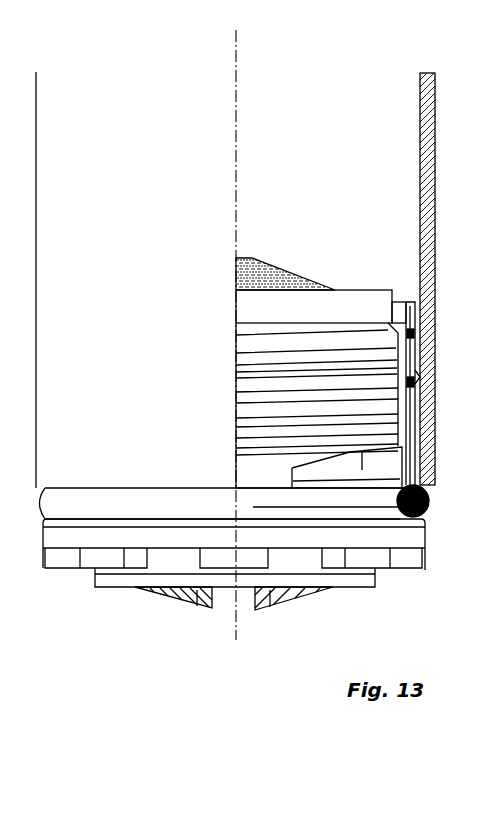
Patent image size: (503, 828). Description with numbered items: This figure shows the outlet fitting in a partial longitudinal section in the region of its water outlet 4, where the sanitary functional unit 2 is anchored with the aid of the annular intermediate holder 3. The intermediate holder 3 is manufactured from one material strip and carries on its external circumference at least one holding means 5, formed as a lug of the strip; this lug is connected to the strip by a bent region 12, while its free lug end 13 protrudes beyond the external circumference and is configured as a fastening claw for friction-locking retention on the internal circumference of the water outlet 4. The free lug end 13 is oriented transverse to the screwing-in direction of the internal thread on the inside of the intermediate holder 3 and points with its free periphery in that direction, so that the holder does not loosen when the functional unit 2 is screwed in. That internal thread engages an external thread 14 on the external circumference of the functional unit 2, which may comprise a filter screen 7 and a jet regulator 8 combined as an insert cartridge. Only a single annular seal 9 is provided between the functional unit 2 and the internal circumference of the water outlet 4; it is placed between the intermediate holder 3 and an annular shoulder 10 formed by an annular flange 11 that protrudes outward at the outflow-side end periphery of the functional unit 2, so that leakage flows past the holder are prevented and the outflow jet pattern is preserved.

The sanitary functional unit 2 is at (370, 291).
The intermediate holder 3 is at (406, 292).
The water outlet 4 is at (425, 316).
The holding means 5 is at (427, 335).
The filter screen 7 is at (294, 274).
The jet regulator 8 is at (166, 607).
The annular seal 9 is at (435, 500).
The annular shoulder 10 is at (251, 507).
The annular flange 11 is at (417, 542).
The bent region 12 is at (406, 378).
The free lug end 13 is at (428, 377).
The external thread 14 is at (249, 371).